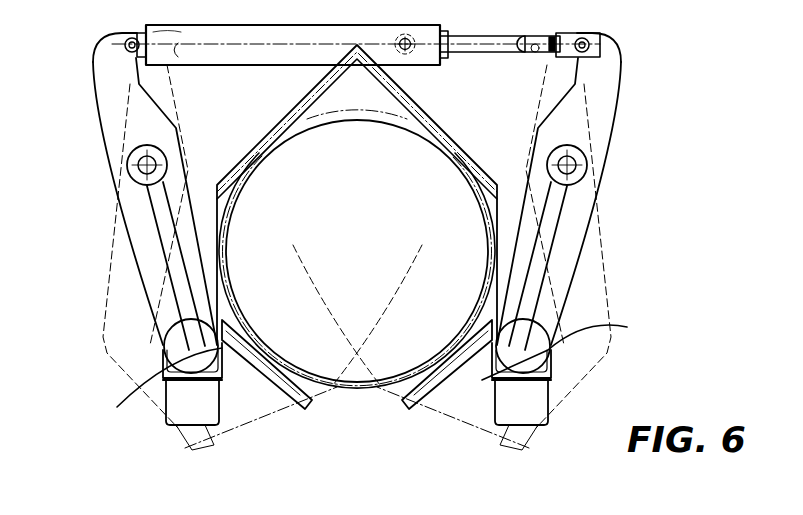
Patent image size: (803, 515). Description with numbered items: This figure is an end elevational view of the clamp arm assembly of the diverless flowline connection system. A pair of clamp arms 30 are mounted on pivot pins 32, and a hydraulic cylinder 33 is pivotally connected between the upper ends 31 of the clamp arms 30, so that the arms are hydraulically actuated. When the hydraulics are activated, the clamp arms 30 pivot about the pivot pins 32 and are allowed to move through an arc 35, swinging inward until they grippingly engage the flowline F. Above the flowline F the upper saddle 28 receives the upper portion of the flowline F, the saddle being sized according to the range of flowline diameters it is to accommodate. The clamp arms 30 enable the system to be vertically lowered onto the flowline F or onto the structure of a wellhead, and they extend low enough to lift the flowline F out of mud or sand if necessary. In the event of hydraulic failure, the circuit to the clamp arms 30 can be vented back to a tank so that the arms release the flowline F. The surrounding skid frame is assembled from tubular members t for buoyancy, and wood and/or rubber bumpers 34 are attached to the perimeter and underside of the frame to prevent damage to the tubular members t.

The upper saddle 28 is at (292, 112).
The clamp arm 30 is at (158, 265).
The upper end of clamp arm 31 is at (110, 53).
The pivot pin 32 is at (140, 165).
The hydraulic cylinder 33 is at (261, 27).
The bumper 34 is at (220, 410).
The arc 35 is at (270, 425).
The flowline F is at (370, 386).
The tubular member t is at (370, 368).